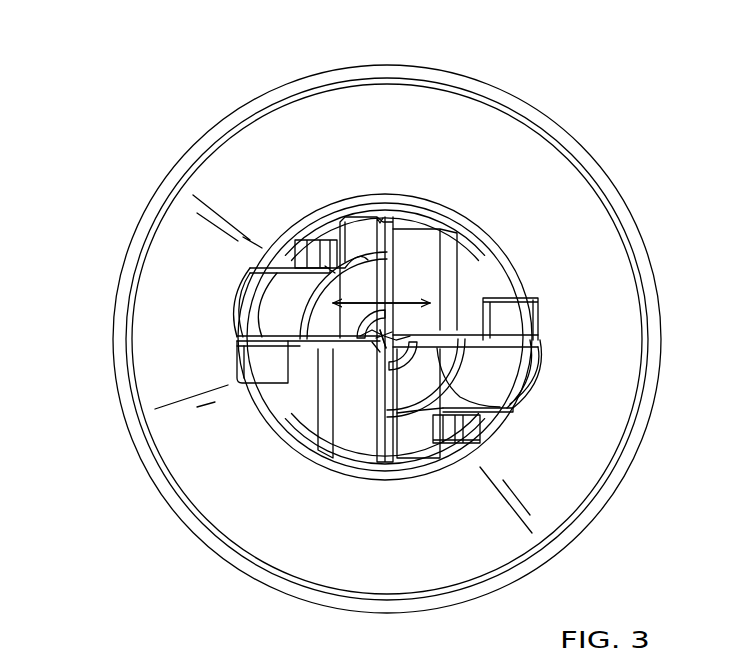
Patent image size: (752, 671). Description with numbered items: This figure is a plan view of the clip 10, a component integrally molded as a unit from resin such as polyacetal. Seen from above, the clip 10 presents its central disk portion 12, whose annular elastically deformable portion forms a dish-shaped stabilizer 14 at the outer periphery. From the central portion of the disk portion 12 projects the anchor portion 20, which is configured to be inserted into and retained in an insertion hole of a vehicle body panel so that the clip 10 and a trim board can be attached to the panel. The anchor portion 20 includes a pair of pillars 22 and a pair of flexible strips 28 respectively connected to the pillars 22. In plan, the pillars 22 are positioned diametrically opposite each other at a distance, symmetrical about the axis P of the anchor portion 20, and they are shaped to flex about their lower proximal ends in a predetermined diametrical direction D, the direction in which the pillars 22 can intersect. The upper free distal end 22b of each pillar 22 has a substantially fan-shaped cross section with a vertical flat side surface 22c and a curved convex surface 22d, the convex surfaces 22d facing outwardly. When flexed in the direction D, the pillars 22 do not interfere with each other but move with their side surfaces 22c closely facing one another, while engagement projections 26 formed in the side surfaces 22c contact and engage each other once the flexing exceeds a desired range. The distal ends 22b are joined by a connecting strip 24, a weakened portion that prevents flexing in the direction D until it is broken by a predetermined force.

The clip 10 is at (195, 118).
The disk portion 12 is at (463, 247).
The stabilizer 14 is at (153, 283).
The anchor portion 20 is at (325, 195).
The pillars 22 is at (360, 237).
The distal end 22b is at (438, 373).
The side surface 22c is at (483, 298).
The convex surface 22d is at (493, 363).
The connecting strip 24 is at (413, 250).
The engagement projections 26 is at (453, 327).
The flexible strips 28 is at (493, 378).
The diametrical direction D is at (347, 278).
The axis P is at (380, 352).